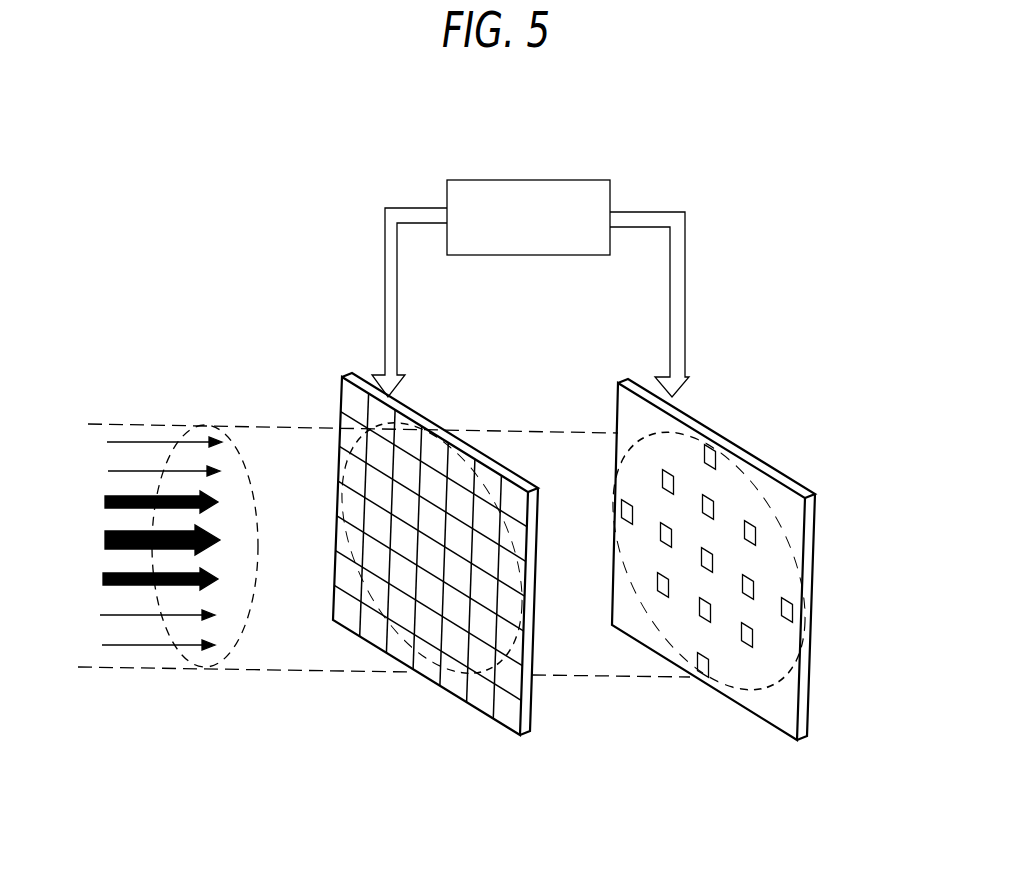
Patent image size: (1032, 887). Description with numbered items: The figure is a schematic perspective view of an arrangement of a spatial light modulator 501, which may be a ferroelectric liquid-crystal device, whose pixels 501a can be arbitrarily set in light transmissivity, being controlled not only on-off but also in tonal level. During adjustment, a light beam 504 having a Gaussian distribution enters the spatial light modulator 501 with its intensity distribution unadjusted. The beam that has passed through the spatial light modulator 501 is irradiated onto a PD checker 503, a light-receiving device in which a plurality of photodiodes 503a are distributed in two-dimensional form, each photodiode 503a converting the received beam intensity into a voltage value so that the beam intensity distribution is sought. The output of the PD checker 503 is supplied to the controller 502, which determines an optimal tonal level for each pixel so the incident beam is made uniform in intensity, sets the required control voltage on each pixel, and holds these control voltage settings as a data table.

The spatial light modulator 501 is at (435, 580).
The pixels 501a is at (451, 706).
The controller 502 is at (530, 178).
The PD checker 503 is at (756, 584).
The photodiodes 503a is at (790, 612).
The light beam 504 is at (228, 650).